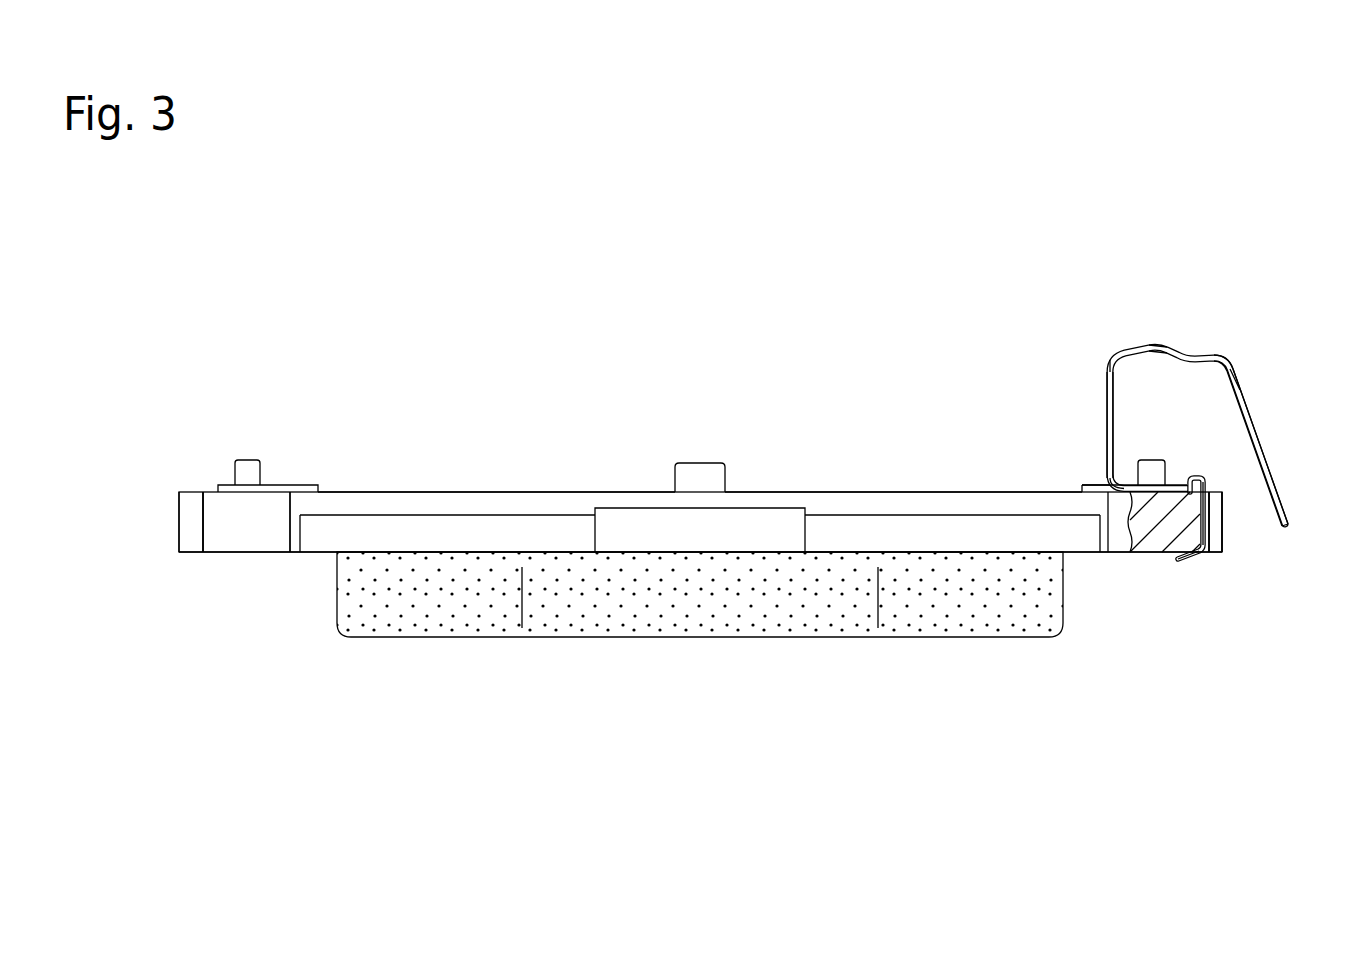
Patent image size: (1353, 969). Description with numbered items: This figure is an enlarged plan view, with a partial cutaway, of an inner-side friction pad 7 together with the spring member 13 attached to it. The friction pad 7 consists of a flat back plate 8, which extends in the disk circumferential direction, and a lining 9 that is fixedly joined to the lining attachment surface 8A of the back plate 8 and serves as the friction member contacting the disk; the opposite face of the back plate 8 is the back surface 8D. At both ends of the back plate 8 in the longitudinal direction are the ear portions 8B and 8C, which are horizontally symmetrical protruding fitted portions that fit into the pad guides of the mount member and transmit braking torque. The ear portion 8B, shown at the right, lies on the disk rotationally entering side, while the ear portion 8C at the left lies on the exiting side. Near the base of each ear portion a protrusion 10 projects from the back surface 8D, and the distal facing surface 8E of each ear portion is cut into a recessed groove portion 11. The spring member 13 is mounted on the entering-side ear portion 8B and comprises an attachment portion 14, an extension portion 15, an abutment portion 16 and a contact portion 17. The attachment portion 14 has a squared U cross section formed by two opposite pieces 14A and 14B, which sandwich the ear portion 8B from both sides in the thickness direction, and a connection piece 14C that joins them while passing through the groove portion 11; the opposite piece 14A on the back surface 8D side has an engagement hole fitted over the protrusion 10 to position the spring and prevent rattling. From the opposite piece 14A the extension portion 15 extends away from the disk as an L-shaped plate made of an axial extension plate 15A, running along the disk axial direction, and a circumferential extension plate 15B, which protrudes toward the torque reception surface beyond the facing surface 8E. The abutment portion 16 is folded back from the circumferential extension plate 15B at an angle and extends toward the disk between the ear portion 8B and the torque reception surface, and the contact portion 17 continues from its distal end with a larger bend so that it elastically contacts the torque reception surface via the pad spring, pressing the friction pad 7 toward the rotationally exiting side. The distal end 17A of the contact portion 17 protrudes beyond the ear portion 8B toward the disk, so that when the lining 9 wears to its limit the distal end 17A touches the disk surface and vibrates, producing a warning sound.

The friction pad 7 is at (694, 378).
The back plate 8 is at (838, 535).
The lining attachment surface 8A is at (562, 552).
The ear portion 8B is at (1158, 522).
The ear portion 8C is at (220, 522).
The back surface 8D is at (510, 492).
The facing surface 8E is at (178, 522).
The lining 9 is at (694, 590).
The protrusion 10 is at (247, 477).
The groove portion 11 is at (1213, 514).
The spring member 13 is at (1152, 334).
The attachment portion 14 is at (1173, 481).
The opposite piece 14A is at (1128, 486).
The opposite piece 14B is at (1187, 562).
The connection piece 14C is at (1206, 536).
The extension portion 15 is at (1120, 352).
The axial extension plate 15A is at (1107, 410).
The circumferential extension plate 15B is at (1186, 355).
The abutment portion 16 is at (1238, 388).
The contact portion 17 is at (1272, 482).
The distal end 17A is at (1291, 532).